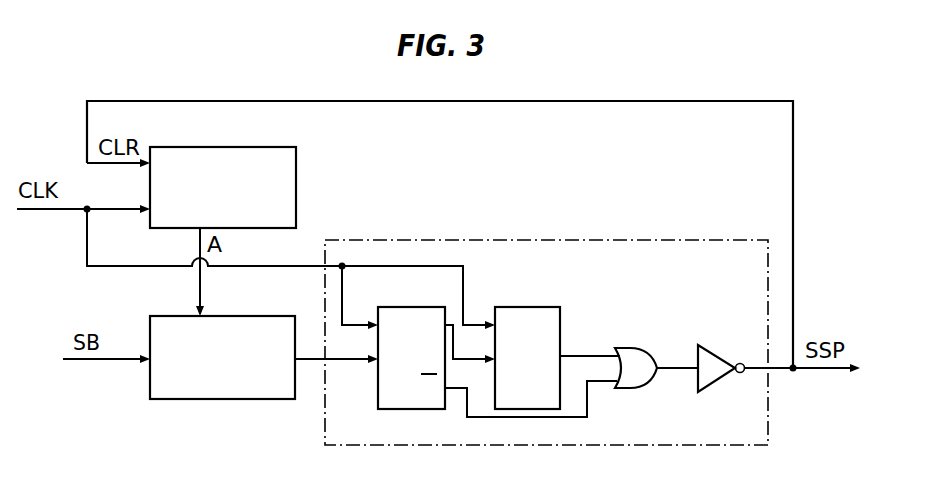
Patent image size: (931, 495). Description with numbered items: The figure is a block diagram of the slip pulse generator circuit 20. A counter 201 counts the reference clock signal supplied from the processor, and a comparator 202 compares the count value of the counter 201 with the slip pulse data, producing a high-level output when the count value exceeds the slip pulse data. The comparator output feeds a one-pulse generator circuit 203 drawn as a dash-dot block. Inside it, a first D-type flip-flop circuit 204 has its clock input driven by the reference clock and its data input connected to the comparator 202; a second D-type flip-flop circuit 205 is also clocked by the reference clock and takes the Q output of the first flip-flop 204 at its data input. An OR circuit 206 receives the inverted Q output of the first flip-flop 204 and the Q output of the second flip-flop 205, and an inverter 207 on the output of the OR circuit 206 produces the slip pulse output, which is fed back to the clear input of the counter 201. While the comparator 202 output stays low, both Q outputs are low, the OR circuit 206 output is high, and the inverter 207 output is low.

The slip pulse generator circuit 20 is at (727, 80).
The counter 201 is at (253, 147).
The comparator 202 is at (253, 318).
The 1-pulse generator circuit 203 is at (525, 238).
The first D-type flip-flop circuit 204 is at (403, 307).
The second D-type flip-flop circuit 205 is at (518, 307).
The OR circuit 206 is at (632, 350).
The inverter 207 is at (705, 350).